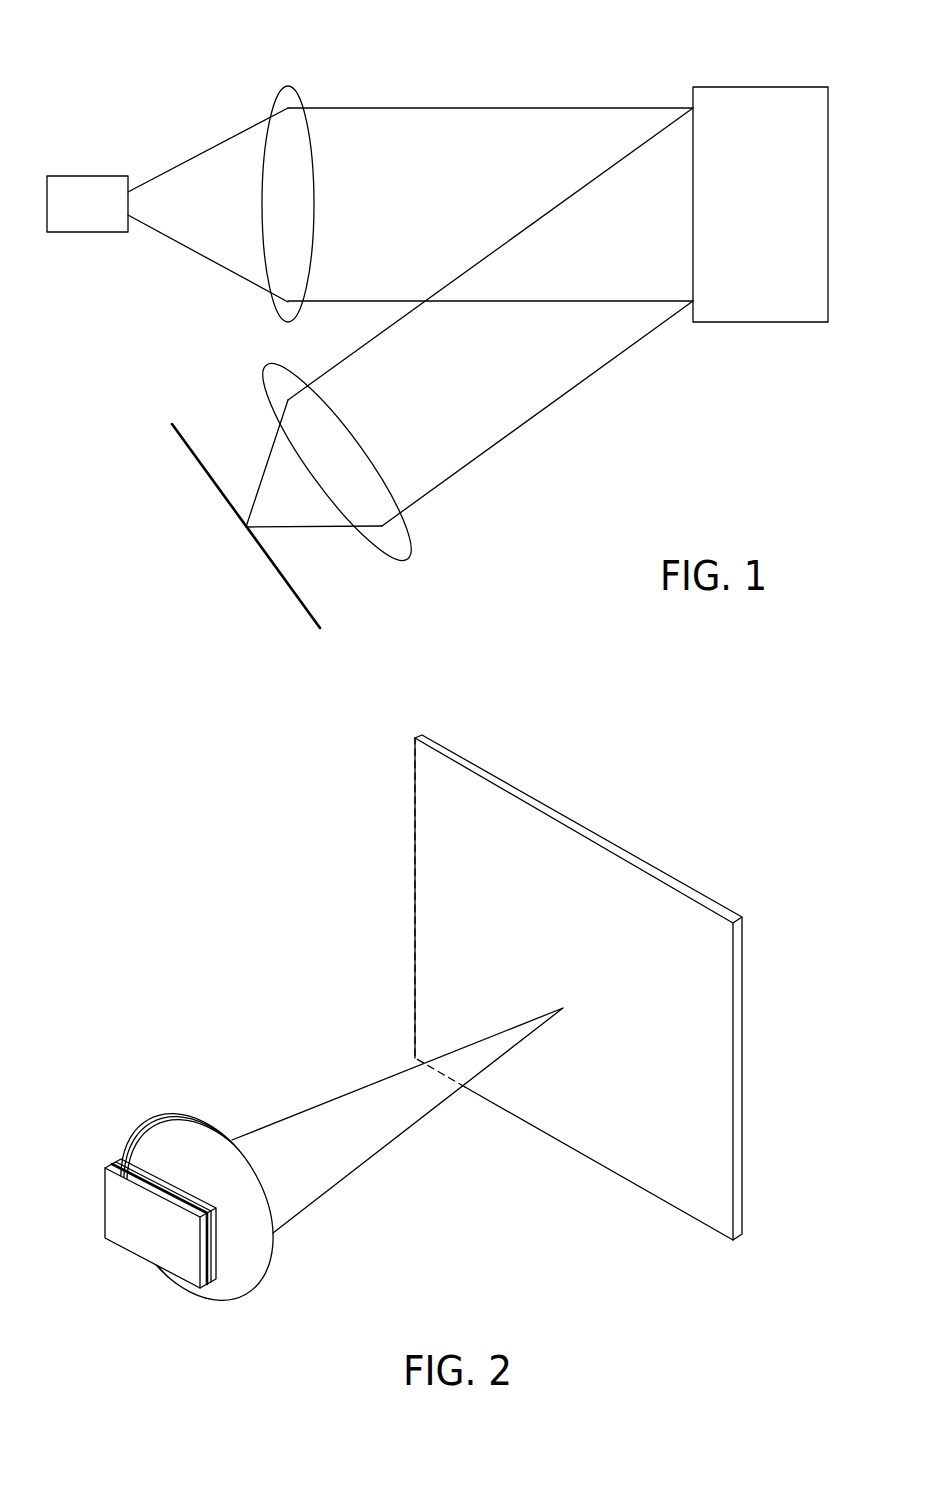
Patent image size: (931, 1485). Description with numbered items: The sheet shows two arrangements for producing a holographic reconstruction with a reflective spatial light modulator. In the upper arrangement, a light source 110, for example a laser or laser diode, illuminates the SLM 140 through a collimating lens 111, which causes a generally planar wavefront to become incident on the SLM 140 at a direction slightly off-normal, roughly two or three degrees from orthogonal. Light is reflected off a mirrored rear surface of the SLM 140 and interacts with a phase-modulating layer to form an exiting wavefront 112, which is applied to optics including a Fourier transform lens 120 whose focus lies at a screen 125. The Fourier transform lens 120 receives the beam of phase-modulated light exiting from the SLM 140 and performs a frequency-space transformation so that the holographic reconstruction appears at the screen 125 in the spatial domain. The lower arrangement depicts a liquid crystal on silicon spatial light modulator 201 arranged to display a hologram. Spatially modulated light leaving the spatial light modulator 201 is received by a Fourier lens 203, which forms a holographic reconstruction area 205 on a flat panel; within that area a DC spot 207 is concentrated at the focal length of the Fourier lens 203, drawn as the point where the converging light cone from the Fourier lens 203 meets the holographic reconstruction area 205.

In FIG. 1, the light source 110 is at (68, 175).
In FIG. 1, the collimating lens 111 is at (288, 85).
In FIG. 1, the SLM 140 is at (742, 87).
In FIG. 1, the exiting wavefront 112 is at (580, 381).
In FIG. 1, the Fourier transform lens 120 is at (407, 558).
In FIG. 1, the screen 125 is at (198, 463).
In FIG. 2, the spatial light modulator 201 is at (162, 1242).
In FIG. 2, the Fourier lens 203 is at (242, 1250).
In FIG. 2, the holographic reconstruction area 205 is at (707, 992).
In FIG. 2, the DC spot 207 is at (562, 1006).